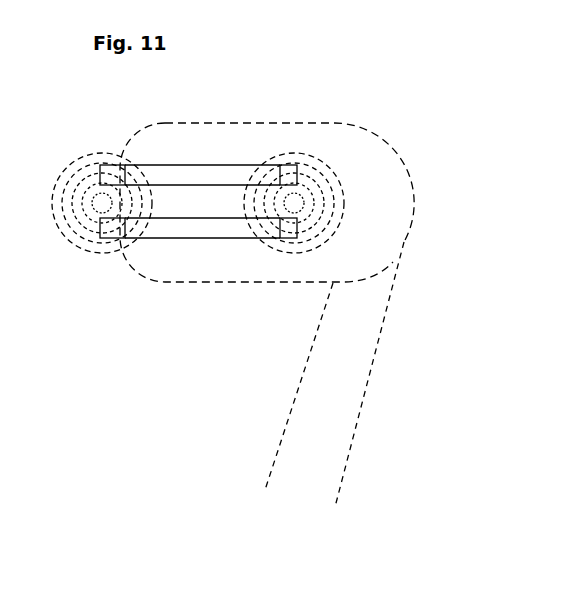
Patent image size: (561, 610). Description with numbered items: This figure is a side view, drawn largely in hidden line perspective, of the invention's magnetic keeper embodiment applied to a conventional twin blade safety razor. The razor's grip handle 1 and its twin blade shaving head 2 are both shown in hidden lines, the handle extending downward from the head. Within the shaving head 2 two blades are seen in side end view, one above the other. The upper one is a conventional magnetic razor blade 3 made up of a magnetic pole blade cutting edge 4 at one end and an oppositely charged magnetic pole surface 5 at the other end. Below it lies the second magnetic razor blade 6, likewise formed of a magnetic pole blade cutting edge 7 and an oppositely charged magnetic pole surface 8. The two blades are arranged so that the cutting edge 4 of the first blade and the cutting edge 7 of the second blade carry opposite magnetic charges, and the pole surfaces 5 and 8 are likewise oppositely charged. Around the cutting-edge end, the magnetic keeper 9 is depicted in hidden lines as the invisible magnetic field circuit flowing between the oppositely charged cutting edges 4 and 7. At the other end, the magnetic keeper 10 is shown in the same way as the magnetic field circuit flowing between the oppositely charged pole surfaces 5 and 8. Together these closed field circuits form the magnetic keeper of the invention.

The grip handle 1 is at (365, 338).
The shaving head 2 is at (328, 123).
The magnetic razor blade 3 is at (219, 170).
The magnetic pole blade cutting edge 4 is at (108, 168).
The magnetic pole surface 5 is at (297, 168).
The second magnetic razor blade 6 is at (175, 230).
The magnetic pole blade cutting edge 7 is at (106, 230).
The magnetic pole surface 8 is at (297, 232).
The magnetic keeper 9 is at (58, 172).
The magnetic keeper 10 is at (343, 192).